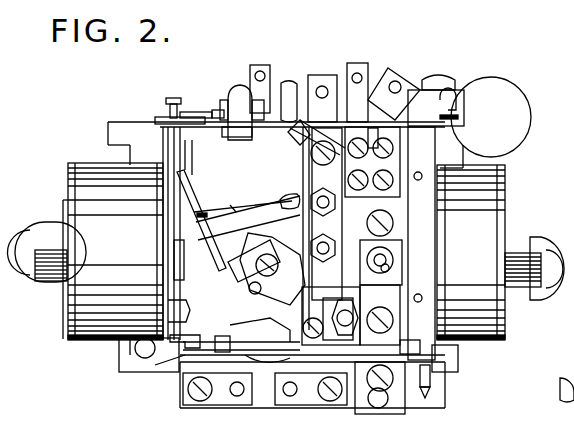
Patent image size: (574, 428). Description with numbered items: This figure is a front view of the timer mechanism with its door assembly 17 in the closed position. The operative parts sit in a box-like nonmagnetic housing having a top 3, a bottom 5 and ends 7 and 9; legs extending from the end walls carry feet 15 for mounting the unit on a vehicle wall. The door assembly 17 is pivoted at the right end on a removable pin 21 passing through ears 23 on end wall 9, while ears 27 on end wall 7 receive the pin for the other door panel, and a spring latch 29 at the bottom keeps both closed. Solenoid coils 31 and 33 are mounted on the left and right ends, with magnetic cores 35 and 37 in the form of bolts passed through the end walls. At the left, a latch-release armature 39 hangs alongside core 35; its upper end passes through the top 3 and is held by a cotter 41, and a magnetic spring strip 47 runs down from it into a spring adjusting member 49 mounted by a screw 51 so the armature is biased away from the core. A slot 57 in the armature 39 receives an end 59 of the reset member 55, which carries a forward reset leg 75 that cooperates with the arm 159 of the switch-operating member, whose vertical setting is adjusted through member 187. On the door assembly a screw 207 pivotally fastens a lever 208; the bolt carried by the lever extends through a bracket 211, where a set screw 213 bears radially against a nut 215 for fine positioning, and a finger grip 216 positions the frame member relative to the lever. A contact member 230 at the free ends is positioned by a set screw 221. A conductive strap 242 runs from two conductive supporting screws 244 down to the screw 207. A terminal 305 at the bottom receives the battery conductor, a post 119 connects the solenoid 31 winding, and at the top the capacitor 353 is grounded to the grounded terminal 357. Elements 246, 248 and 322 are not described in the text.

The top 3 is at (217, 117).
The bottom 5 is at (182, 338).
The end 7 is at (166, 205).
The end 9 is at (436, 220).
The feet 15 is at (108, 124).
The door assembly 17 is at (372, 128).
The removable pin 21 is at (455, 110).
The ears 23 is at (456, 124).
The ears 27 is at (158, 120).
The spring latch 29 is at (294, 360).
The solenoid coil 31 is at (70, 166).
The solenoid coil 33 is at (503, 197).
The magnetic core 35 is at (170, 246).
The magnetic core 37 is at (542, 276).
The latch-release armature 39 is at (192, 198).
The cotter 41 is at (173, 104).
The magnetic spring strip 47 is at (174, 275).
The spring adjusting member 49 is at (172, 305).
The screw 51 is at (238, 345).
The reset member 55 is at (236, 206).
The slot 57 is at (203, 225).
The end 59 is at (196, 212).
The reset leg 75 is at (286, 199).
The post 119 is at (380, 405).
The arm 159 is at (240, 212).
The member 187 is at (309, 196).
The screw 207 is at (331, 315).
The lever 208 is at (262, 344).
The bracket 211 is at (356, 340).
The set screw 213 is at (311, 389).
The nut 215 is at (380, 315).
The finger grip 216 is at (232, 268).
The set screw 221 is at (293, 240).
The contact member 230 is at (254, 278).
The conductive strap 242 is at (365, 237).
The conductive supporting screws 244 is at (378, 217).
The contact point 246 is at (393, 269).
The terminal 248 is at (395, 327).
The terminal 305 is at (390, 396).
The terminal block 322 is at (220, 400).
The capacitor 353 is at (498, 92).
The grounded terminal 357 is at (393, 76).